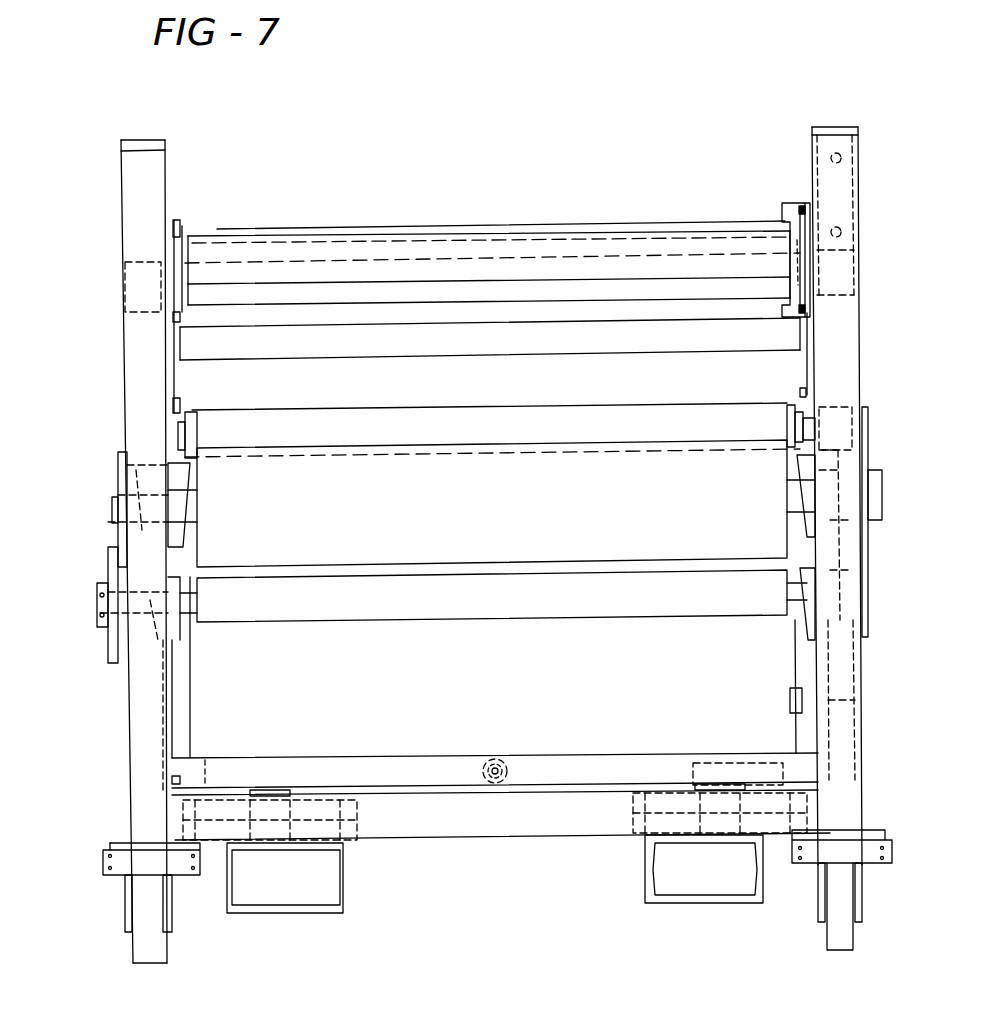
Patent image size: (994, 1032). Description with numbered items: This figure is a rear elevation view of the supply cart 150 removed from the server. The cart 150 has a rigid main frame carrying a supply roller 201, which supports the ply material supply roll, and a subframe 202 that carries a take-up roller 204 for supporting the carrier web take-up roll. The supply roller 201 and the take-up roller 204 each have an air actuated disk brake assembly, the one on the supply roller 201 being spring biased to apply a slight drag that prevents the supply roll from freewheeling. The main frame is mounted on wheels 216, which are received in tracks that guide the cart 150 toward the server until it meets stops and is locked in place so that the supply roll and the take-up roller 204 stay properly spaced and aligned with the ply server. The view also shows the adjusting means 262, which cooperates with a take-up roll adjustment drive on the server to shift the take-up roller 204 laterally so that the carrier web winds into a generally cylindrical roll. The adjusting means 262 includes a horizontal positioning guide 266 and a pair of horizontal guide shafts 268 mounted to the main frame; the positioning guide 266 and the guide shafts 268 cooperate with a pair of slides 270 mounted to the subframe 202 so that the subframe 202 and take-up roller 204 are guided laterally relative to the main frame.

The cart 150 is at (145, 683).
The supply roller 201 is at (337, 488).
The subframe 202 is at (182, 713).
The take-up roller 204 is at (405, 598).
The wheels 216 is at (157, 953).
The adjusting means 262 is at (622, 799).
The horizontal positioning guide 266 is at (543, 718).
The horizontal guide shafts 268 is at (297, 803).
The slides 270 is at (272, 847).